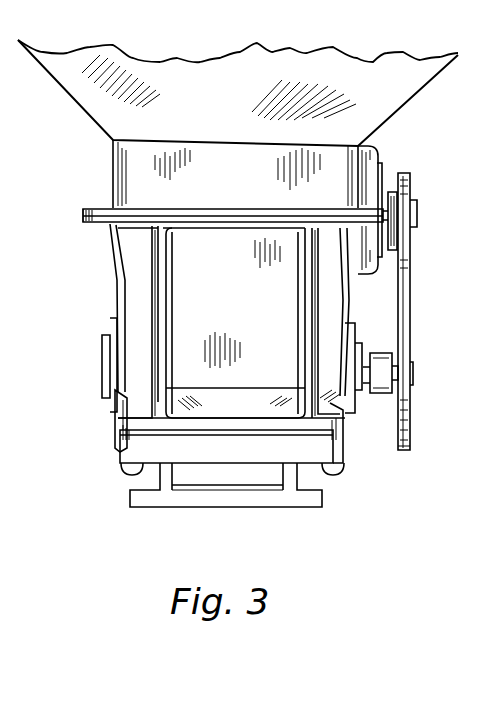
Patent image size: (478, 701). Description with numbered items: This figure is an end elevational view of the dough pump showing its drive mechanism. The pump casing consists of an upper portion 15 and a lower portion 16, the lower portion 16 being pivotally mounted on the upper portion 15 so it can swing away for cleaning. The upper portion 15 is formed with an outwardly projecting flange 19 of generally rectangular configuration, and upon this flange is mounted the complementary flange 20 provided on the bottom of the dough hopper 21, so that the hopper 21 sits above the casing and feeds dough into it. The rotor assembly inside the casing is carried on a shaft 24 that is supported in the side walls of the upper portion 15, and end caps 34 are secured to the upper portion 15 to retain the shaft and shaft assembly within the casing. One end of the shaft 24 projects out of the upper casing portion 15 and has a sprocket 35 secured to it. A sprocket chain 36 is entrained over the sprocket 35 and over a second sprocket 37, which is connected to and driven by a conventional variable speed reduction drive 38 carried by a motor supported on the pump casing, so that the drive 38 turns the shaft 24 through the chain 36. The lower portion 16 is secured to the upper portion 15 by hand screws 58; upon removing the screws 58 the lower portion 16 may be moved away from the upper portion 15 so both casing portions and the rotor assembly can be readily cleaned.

The upper portion of the pump casing 15 is at (132, 282).
The lower portion of the pump casing 16 is at (142, 448).
The outwardly projecting flange 19 is at (90, 224).
The flange 20 is at (97, 208).
The dough hopper 21 is at (107, 95).
The shaft 24 is at (362, 394).
The end caps 34 is at (102, 373).
The sprocket 35 is at (394, 452).
The sprocket chain 36 is at (410, 280).
The second sprocket 37 is at (410, 190).
The variable speed reduction drive 38 is at (380, 155).
The hand screws 58 is at (127, 465).